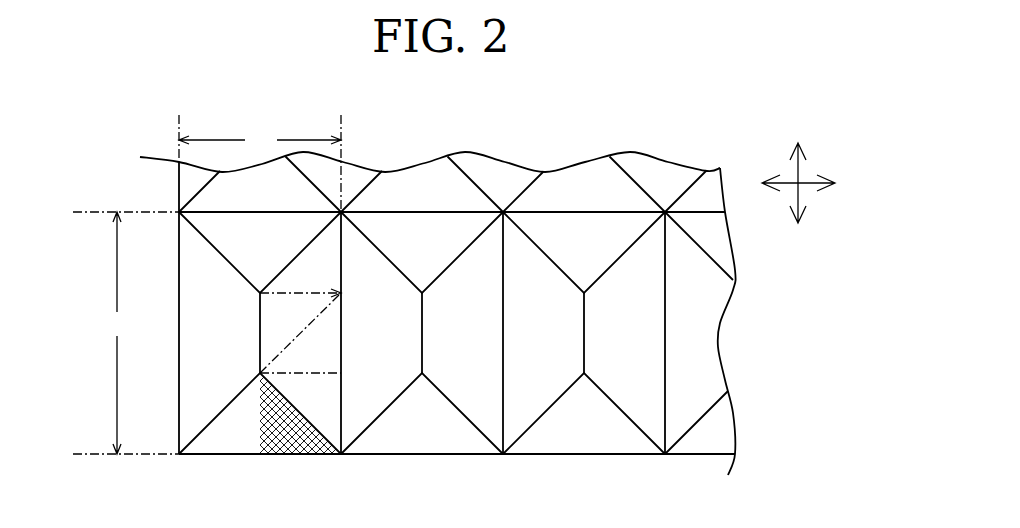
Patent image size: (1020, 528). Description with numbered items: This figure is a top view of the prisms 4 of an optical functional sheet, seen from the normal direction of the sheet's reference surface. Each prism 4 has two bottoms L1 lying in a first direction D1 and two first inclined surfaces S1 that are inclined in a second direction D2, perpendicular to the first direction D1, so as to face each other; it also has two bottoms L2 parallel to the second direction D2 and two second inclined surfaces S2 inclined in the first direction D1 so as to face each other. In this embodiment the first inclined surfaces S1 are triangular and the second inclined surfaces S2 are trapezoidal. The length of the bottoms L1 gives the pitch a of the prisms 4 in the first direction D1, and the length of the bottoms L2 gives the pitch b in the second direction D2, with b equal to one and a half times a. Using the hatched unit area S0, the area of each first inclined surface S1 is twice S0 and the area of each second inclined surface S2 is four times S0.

The prism 4 is at (404, 309).
The unit area S0 is at (290, 432).
The first inclined surface S1 is at (427, 237).
The second inclined surface S2 is at (375, 393).
The bottom L1 is at (615, 212).
The bottom L2 is at (503, 263).
The first direction D1 is at (812, 175).
The second direction D2 is at (813, 197).